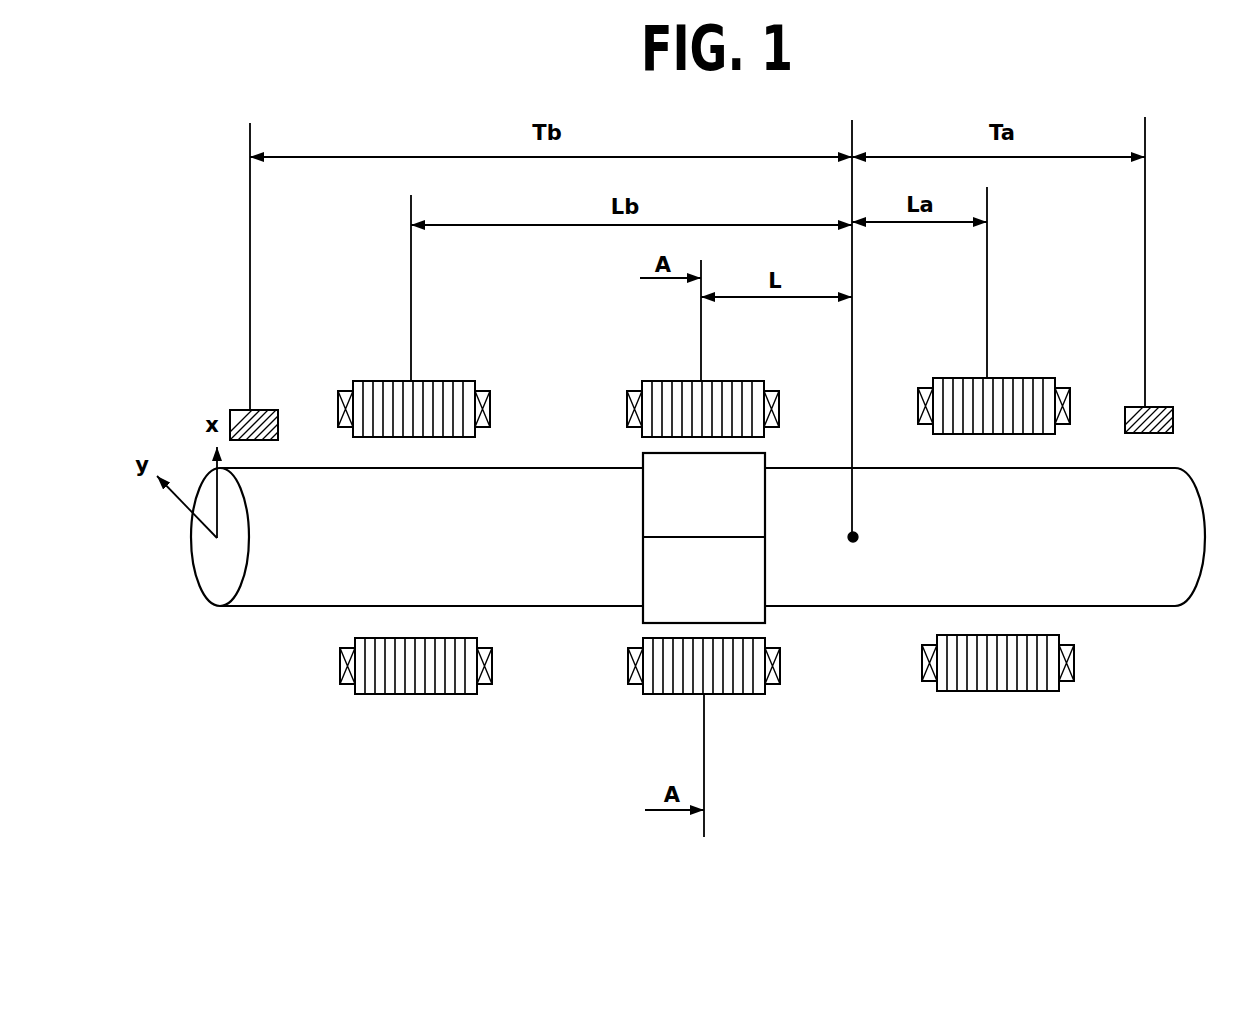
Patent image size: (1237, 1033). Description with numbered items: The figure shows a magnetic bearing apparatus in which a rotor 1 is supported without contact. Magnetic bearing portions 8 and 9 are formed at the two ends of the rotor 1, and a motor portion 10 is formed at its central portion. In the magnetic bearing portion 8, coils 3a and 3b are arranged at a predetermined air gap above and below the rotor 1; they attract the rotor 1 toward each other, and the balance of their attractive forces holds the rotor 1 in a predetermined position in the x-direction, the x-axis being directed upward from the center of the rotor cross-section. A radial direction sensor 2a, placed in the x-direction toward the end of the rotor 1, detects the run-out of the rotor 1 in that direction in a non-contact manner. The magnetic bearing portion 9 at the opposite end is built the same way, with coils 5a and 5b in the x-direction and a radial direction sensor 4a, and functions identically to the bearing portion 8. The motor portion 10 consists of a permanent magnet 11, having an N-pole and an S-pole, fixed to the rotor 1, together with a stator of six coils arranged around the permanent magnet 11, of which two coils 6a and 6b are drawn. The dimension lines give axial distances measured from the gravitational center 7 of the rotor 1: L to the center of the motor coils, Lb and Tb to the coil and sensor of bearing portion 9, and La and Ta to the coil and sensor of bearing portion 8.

The rotor 1 is at (1157, 606).
The radial direction sensor 2a is at (1165, 407).
The coil 3a is at (1017, 377).
The coil 3b is at (1032, 692).
The radial direction sensor 4a is at (243, 410).
The coil 5a is at (387, 378).
The coil 5b is at (450, 695).
The coil 6a is at (655, 377).
The coil 6b is at (668, 695).
The gravitational center 7 is at (858, 537).
The magnetic bearing portion 8 is at (920, 627).
The magnetic bearing portion 9 is at (499, 438).
The motor portion 10 is at (782, 438).
The permanent magnet 11 is at (765, 600).